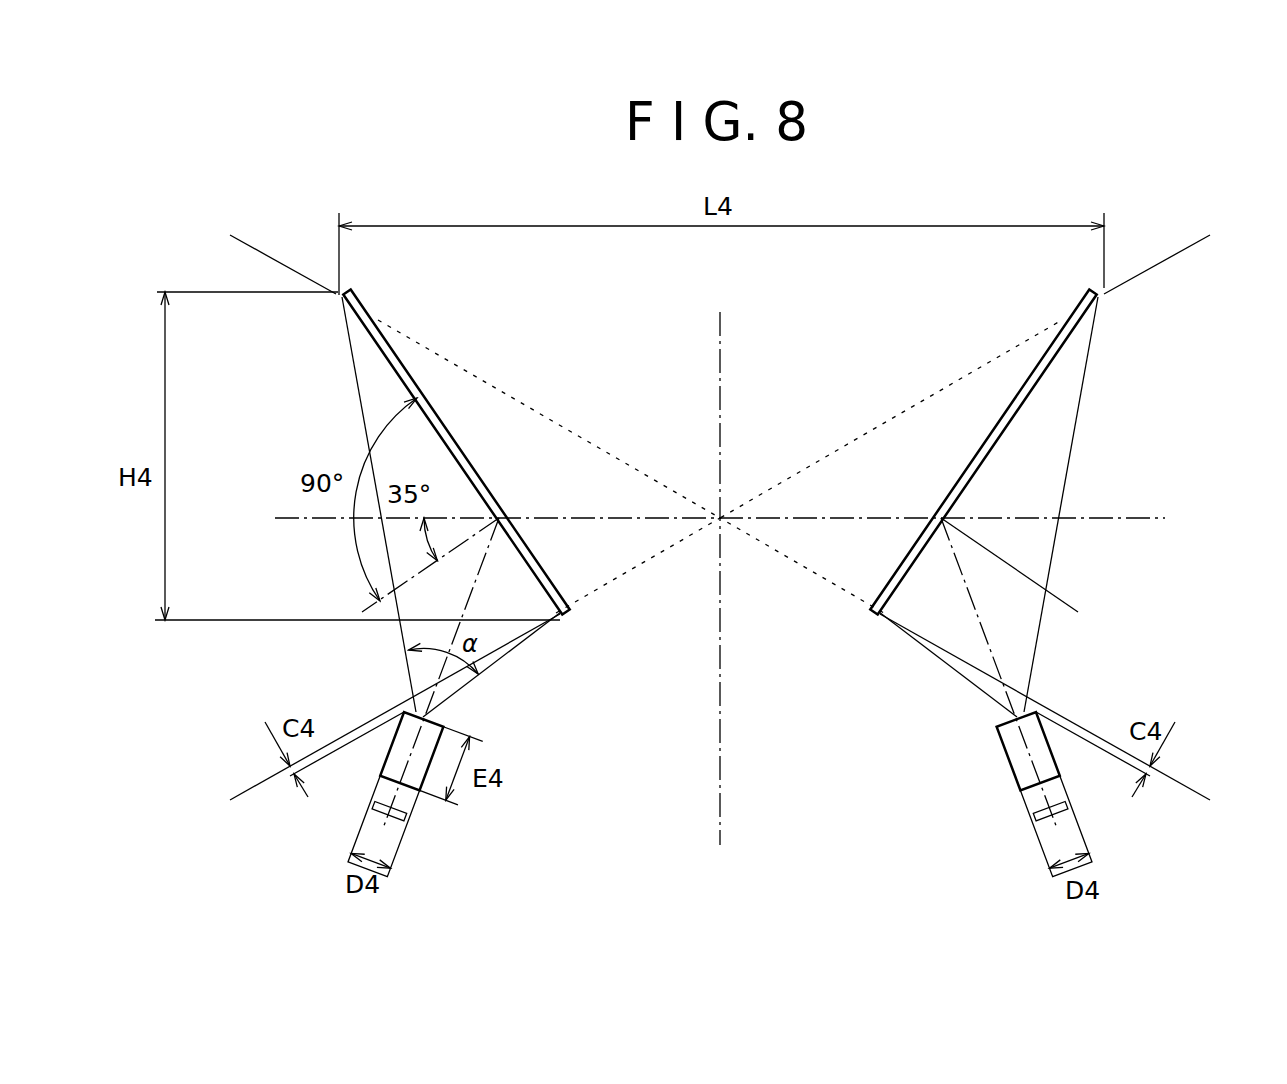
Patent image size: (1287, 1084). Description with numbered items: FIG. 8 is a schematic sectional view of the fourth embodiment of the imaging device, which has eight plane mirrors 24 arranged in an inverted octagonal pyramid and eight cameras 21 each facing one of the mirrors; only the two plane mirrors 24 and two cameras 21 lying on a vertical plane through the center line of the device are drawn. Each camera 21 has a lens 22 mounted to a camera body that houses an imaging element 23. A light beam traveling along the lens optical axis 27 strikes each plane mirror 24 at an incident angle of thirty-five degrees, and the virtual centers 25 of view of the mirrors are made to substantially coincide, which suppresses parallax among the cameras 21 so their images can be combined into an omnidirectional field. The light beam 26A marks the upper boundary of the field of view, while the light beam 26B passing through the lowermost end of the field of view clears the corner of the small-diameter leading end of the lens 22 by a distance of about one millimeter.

The camera 21 is at (517, 878).
The lens 22 is at (425, 793).
The imaging element 23 is at (393, 817).
The plane mirror 24 is at (399, 358).
The virtual center of view 25 is at (721, 516).
The light beam 26A is at (257, 250).
The light beam passing through the lowermost end of the field of view 26B is at (250, 787).
The lens optical axis 27 is at (975, 591).